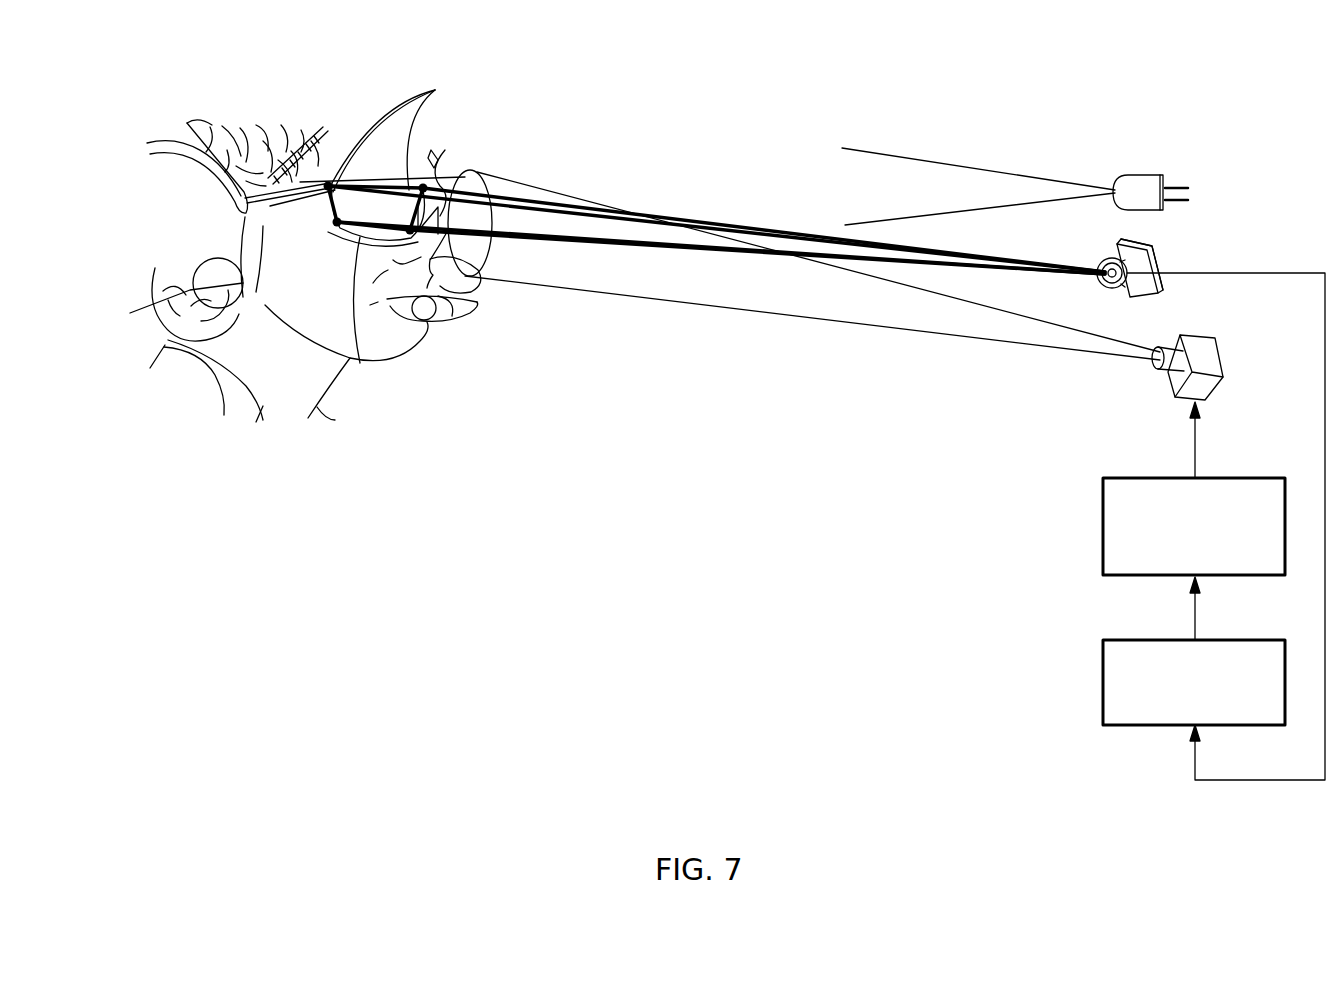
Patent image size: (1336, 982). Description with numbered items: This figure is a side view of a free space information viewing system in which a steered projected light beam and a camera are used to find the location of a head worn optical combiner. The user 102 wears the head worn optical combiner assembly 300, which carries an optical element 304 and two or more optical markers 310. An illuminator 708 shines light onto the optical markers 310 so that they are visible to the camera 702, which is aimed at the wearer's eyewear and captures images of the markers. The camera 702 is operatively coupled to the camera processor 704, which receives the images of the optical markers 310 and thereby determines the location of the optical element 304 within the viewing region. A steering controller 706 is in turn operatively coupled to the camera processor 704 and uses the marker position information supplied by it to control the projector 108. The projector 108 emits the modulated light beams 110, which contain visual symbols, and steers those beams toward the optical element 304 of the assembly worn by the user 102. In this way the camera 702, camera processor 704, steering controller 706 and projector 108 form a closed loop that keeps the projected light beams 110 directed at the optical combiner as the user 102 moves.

The user 102 is at (150, 291).
The head worn optical combiner assembly 300 is at (306, 192).
The optical markers 310 is at (434, 90).
The optical element 304 is at (360, 363).
The modulated light beams 110 is at (737, 312).
The projector 108 is at (1175, 397).
The camera 702 is at (1155, 255).
The camera processor 704 is at (1103, 673).
The steering controller 706 is at (1103, 510).
The illuminator 708 is at (1163, 172).